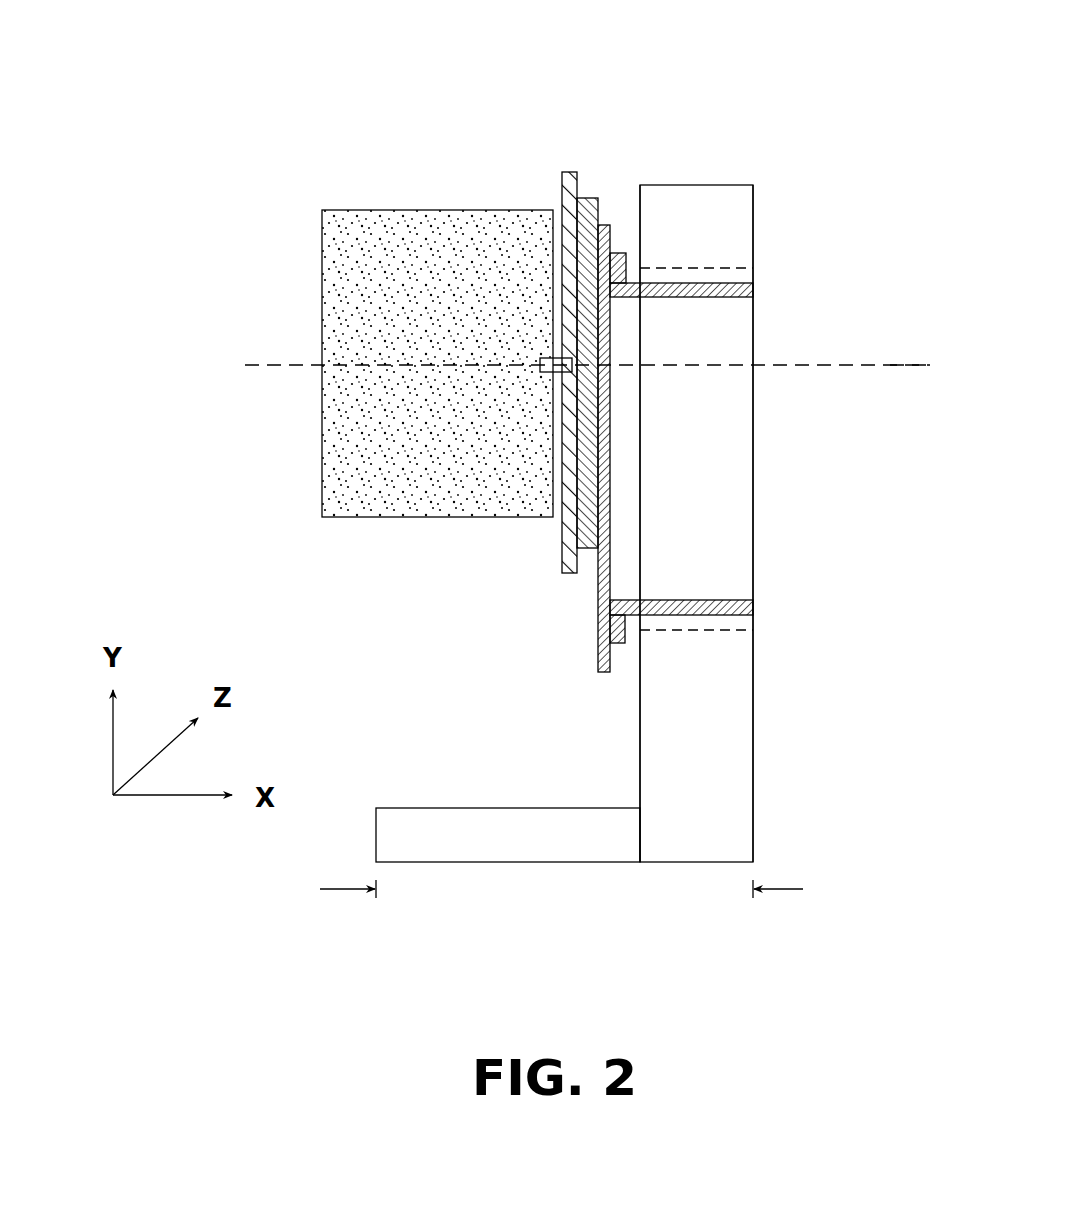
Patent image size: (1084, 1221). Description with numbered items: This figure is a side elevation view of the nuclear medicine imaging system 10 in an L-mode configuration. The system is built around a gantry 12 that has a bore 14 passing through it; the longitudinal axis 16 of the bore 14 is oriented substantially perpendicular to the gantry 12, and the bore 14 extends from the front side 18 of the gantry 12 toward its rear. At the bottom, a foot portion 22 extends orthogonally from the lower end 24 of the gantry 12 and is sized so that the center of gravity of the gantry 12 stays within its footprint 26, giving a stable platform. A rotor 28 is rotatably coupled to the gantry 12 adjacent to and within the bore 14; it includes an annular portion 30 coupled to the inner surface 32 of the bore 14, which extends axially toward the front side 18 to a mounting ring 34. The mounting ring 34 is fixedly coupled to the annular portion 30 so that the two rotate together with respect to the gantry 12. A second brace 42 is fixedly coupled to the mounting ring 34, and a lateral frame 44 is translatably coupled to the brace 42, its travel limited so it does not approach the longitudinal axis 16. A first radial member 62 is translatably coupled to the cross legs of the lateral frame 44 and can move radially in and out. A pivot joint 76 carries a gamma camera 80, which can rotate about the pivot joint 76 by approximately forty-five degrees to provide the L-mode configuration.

The nuclear medicine imaging system 10 is at (312, 60).
The gantry 12 is at (688, 523).
The bore 14 is at (767, 351).
The longitudinal axis 16 is at (907, 360).
The front side 18 is at (638, 752).
The foot portion 22 is at (523, 850).
The lower end 24 is at (730, 840).
The footprint 26 is at (788, 893).
The rotor 28 is at (687, 401).
The annular portion 30 is at (755, 290).
The inner surface 32 is at (662, 268).
The mounting ring 34 is at (617, 645).
The second brace 42 is at (600, 672).
The lateral frame 44 is at (588, 198).
The first radial member 62 is at (568, 574).
The pivot joint 76 is at (553, 372).
The gamma camera 80 is at (447, 212).